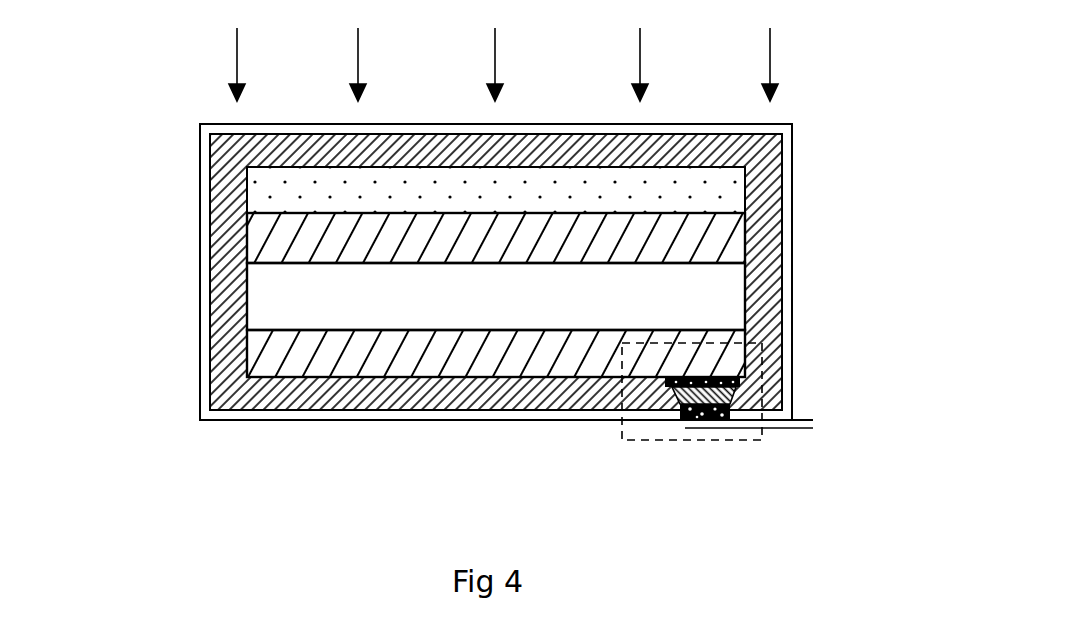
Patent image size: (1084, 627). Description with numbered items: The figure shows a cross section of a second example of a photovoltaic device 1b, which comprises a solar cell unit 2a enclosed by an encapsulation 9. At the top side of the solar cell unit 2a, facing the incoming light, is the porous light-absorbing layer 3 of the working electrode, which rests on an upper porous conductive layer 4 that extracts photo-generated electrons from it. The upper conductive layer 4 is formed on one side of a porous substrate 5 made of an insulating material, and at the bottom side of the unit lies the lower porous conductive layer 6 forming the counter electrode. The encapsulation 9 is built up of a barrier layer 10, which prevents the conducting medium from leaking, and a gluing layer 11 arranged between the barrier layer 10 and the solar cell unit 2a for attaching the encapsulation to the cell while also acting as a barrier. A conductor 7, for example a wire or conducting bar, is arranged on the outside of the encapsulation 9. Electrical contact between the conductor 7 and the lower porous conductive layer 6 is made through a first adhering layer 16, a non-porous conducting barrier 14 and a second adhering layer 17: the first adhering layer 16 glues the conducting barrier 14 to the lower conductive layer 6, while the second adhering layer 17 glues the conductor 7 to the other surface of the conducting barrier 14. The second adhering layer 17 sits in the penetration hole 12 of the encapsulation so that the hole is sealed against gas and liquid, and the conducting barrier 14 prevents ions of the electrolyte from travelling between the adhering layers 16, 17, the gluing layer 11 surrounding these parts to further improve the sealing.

The photovoltaic device 1b is at (822, 141).
The solar cell unit 2a is at (507, 160).
The light-absorbing layer 3 is at (250, 191).
The upper porous conductive layer 4 is at (252, 238).
The porous substrate 5 is at (252, 283).
The lower porous conductive layer 6 is at (252, 353).
The conductor 7 is at (782, 430).
The encapsulation 9 is at (193, 140).
The barrier layer 10 is at (422, 412).
The gluing layer 11 is at (325, 393).
The penetration hole 12 is at (682, 434).
The conducting barrier 14 is at (732, 397).
The first adhering layer 16 is at (742, 381).
The second adhering layer 17 is at (707, 421).